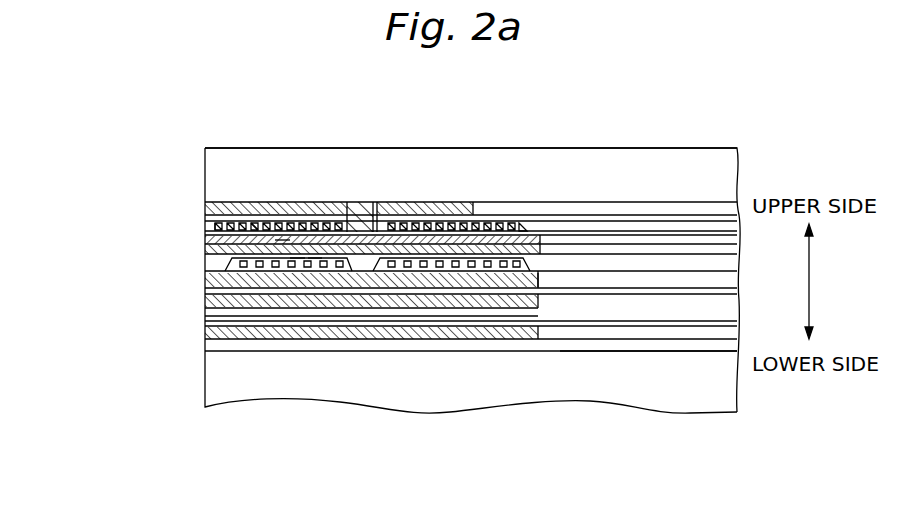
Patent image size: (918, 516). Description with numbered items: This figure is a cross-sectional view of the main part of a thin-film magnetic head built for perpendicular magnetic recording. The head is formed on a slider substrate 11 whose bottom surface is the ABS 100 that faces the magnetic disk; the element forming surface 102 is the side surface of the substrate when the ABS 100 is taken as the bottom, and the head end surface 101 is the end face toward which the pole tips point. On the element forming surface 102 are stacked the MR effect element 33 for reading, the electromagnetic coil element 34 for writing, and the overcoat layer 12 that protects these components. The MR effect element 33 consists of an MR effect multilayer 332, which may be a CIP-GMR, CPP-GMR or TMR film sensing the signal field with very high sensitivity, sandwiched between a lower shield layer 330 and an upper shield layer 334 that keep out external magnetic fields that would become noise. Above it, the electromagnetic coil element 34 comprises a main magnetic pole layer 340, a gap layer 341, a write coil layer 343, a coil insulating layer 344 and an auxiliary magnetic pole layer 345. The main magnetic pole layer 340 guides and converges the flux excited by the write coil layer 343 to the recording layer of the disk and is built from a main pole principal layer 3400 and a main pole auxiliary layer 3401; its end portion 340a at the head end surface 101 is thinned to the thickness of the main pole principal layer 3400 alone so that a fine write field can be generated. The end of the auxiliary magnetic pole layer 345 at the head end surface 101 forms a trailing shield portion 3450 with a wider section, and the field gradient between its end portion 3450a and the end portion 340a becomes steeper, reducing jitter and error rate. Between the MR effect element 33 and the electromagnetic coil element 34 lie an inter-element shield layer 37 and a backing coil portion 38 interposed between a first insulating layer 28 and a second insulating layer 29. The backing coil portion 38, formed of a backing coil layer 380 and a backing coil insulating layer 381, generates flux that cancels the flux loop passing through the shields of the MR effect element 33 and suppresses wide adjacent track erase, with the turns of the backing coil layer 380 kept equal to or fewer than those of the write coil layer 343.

The slider substrate 11 is at (205, 397).
The overcoat layer 12 is at (477, 173).
The head end surface 101 is at (204, 151).
The element forming surface 102 is at (600, 352).
The ABS 100 is at (205, 370).
The electromagnetic coil element 34 is at (62, 128).
The auxiliary magnetic pole layer 345 is at (278, 203).
The coil insulating layer 344 is at (256, 220).
The write coil layer 343 is at (227, 218).
The gap layer 341 is at (207, 233).
The main magnetic pole layer 340 is at (121, 228).
The main pole auxiliary layer 3401 is at (205, 236).
The main pole principal layer 3400 is at (205, 251).
The second insulating layer 29 is at (205, 271).
The first insulating layer 28 is at (205, 289).
The MR effect element 33 is at (103, 315).
The upper shield layer 334 is at (205, 303).
The MR effect multilayer 332 is at (205, 318).
The lower shield layer 330 is at (205, 332).
The end portion of the main magnetic pole layer 340a is at (232, 222).
The end portion of the trailing shield portion 3450a is at (259, 222).
The trailing shield portion 3450 is at (282, 240).
The backing coil portion 38 is at (480, 455).
The backing coil layer 380 is at (297, 255).
The backing coil insulating layer 381 is at (315, 257).
The inter-element shield layer 37 is at (509, 278).